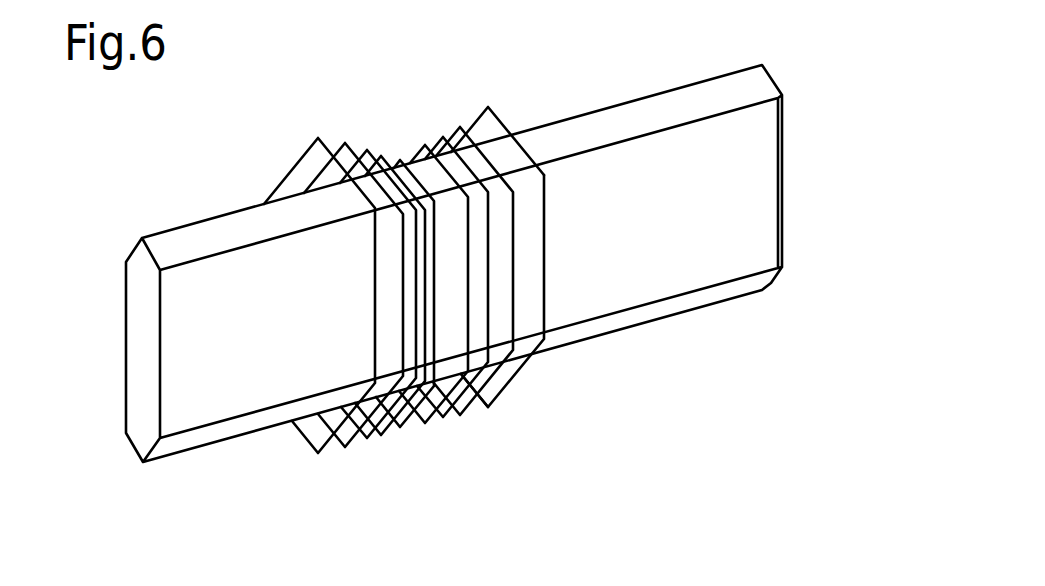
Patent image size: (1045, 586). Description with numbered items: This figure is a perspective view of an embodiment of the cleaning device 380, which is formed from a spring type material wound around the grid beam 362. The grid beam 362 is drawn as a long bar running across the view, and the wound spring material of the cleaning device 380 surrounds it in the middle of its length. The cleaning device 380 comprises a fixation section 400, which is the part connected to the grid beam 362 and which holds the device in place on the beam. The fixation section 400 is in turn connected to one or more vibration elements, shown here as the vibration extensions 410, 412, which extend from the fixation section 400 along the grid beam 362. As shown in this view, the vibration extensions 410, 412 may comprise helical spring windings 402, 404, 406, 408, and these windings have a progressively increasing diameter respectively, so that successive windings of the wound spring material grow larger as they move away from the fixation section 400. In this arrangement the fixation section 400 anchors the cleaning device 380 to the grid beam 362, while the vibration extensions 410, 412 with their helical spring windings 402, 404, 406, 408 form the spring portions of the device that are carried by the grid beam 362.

The grid beam 362 is at (185, 470).
The cleaning device 380 is at (474, 436).
The fixation section 400 is at (380, 136).
The helical spring winding 402 is at (470, 295).
The helical spring winding 404 is at (490, 250).
The helical spring winding 406 is at (452, 136).
The helical spring winding 408 is at (483, 106).
The vibration extension 410 is at (333, 458).
The vibration extension 412 is at (528, 390).